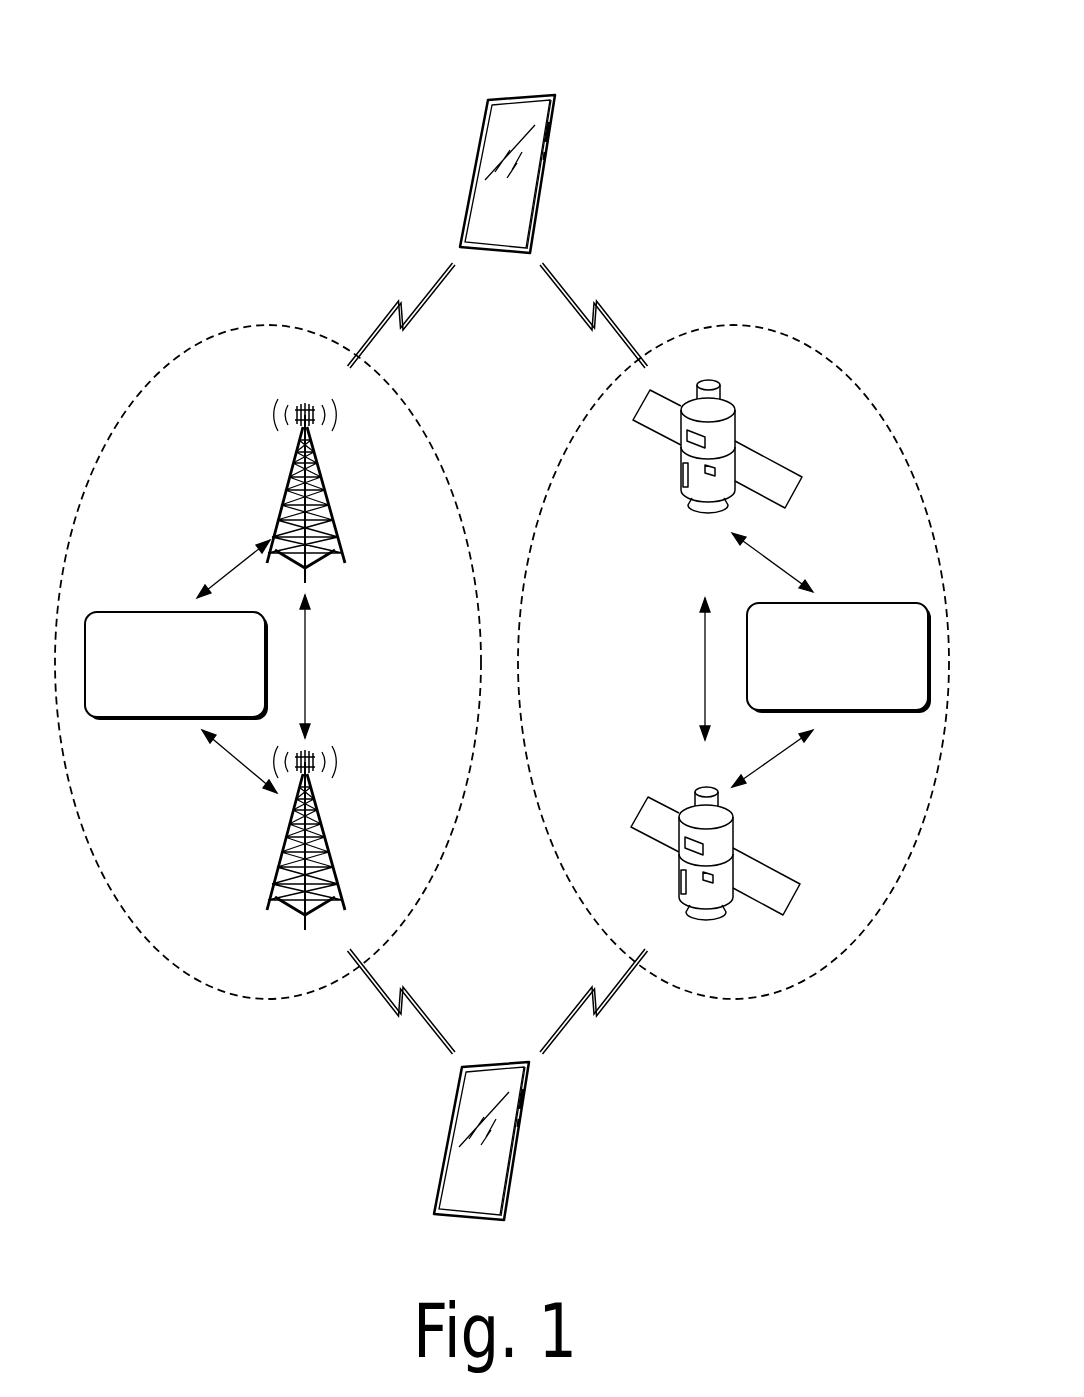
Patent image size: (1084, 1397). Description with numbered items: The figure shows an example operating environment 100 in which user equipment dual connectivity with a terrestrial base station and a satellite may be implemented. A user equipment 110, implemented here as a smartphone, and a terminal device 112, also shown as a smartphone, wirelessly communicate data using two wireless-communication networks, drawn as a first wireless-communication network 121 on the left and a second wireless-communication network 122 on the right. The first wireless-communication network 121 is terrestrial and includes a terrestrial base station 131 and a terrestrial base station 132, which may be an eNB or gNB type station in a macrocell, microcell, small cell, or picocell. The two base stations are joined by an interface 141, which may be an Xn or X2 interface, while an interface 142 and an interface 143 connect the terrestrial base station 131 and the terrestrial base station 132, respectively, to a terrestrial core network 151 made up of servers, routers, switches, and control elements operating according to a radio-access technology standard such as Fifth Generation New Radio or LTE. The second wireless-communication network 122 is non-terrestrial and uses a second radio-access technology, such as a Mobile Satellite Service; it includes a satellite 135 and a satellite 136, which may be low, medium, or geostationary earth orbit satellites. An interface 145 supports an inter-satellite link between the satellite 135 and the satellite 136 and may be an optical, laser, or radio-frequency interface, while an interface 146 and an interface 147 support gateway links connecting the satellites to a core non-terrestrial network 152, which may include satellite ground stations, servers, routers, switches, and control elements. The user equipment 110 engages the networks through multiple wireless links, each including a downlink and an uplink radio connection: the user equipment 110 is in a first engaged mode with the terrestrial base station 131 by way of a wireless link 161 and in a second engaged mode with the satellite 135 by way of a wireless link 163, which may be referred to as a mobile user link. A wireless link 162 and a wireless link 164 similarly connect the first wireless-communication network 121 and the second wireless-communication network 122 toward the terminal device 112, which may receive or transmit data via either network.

The operating environment 100 is at (180, 42).
The user equipment 110 is at (540, 82).
The terminal device 112 is at (528, 1185).
The first wireless-communication network 121 is at (165, 355).
The second wireless-communication network 122 is at (840, 352).
The terrestrial base station 131 is at (335, 525).
The terrestrial base station 132 is at (333, 815).
The satellite 135 is at (683, 528).
The satellite 136 is at (680, 778).
The interface 141 is at (312, 670).
The interface 142 is at (225, 560).
The interface 143 is at (228, 778).
The interface 145 is at (692, 672).
The interface 146 is at (795, 568).
The interface 147 is at (783, 776).
The terrestrial core network 151 is at (176, 666).
The core non-terrestrial network 152 is at (839, 658).
The wireless link 161 is at (405, 295).
The wireless link 162 is at (413, 1028).
The wireless link 163 is at (590, 295).
The wireless link 164 is at (580, 1028).